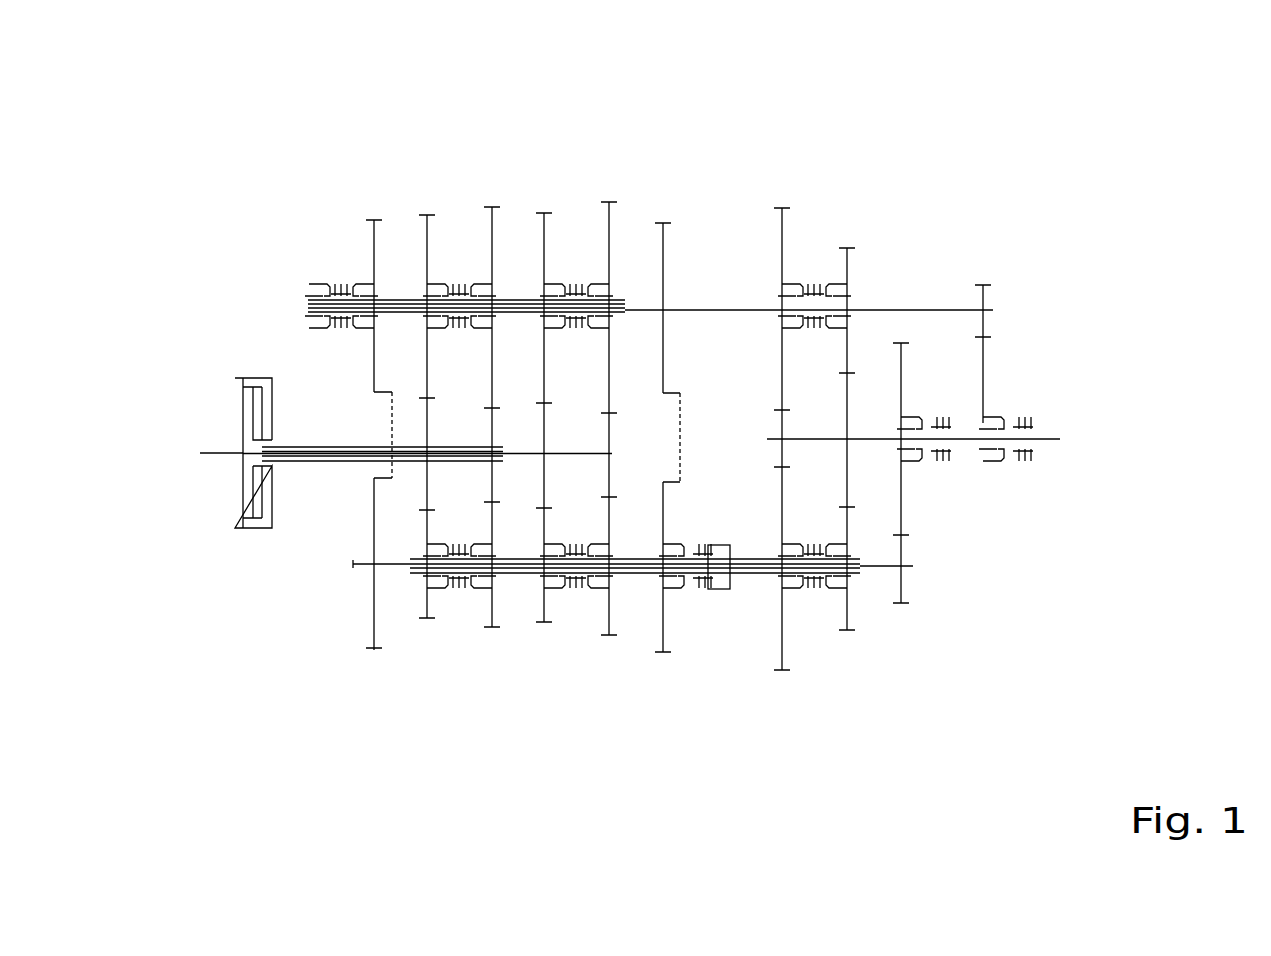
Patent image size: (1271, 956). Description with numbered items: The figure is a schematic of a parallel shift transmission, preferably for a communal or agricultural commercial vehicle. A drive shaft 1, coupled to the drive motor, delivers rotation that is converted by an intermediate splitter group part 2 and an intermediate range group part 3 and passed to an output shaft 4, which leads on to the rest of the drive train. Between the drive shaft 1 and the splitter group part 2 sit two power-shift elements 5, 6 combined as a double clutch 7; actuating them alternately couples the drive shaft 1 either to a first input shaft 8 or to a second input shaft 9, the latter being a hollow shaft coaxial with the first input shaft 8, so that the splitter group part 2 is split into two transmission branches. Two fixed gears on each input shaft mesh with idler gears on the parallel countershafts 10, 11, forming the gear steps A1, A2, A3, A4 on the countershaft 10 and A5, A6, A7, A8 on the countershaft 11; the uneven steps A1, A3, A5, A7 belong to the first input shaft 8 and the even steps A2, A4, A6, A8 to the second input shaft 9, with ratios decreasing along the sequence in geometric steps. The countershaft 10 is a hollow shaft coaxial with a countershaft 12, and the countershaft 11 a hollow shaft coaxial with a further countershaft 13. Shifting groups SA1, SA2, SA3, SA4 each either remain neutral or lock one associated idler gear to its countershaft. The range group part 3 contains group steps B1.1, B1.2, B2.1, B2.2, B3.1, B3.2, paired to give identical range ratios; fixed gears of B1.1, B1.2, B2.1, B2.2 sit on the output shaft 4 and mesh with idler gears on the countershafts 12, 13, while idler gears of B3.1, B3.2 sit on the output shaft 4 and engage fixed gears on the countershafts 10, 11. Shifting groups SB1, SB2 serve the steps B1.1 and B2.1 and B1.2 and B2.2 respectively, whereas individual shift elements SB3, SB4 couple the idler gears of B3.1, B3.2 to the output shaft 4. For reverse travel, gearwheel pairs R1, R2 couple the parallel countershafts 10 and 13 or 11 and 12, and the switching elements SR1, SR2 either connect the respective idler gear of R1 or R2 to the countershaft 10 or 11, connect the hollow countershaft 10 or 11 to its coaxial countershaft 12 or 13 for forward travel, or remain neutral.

The drive shaft 1 is at (210, 455).
The splitter group part 2 is at (492, 150).
The range group part 3 is at (892, 203).
The output shaft 4 is at (1055, 440).
The power-shift element 5 is at (237, 519).
The power-shift element 6 is at (265, 520).
The double clutch 7 is at (238, 368).
The first input shaft 8 is at (337, 463).
The second input shaft 9 is at (325, 442).
The countershaft 10 is at (399, 285).
The countershaft 11 is at (642, 578).
The countershaft 12 is at (913, 310).
The further countershaft 13 is at (357, 565).
The gearwheel pair R1 is at (364, 243).
The gearwheel pair R2 is at (675, 257).
The gear step A1 is at (622, 195).
The gear step A2 is at (497, 200).
The gear step A3 is at (548, 205).
The gear step A4 is at (425, 205).
The gear step A5 is at (610, 648).
The gear step A6 is at (490, 637).
The gear step A7 is at (541, 635).
The gear step A8 is at (423, 630).
The shifting group SA1 is at (575, 280).
The shifting group SA2 is at (458, 282).
The shifting group SA3 is at (575, 598).
The shifting group SA4 is at (457, 598).
The switching element SR1 is at (340, 282).
The switching element SR2 is at (694, 600).
The group step B1.1 is at (780, 198).
The group step B1.2 is at (780, 675).
The group step B2.1 is at (847, 242).
The group step B2.2 is at (848, 638).
The group step B3.1 is at (983, 273).
The group step B3.2 is at (900, 610).
The shifting group SB1 is at (817, 288).
The shifting group SB2 is at (813, 600).
The individual shift element SB3 is at (1012, 417).
The individual shift element SB4 is at (935, 473).